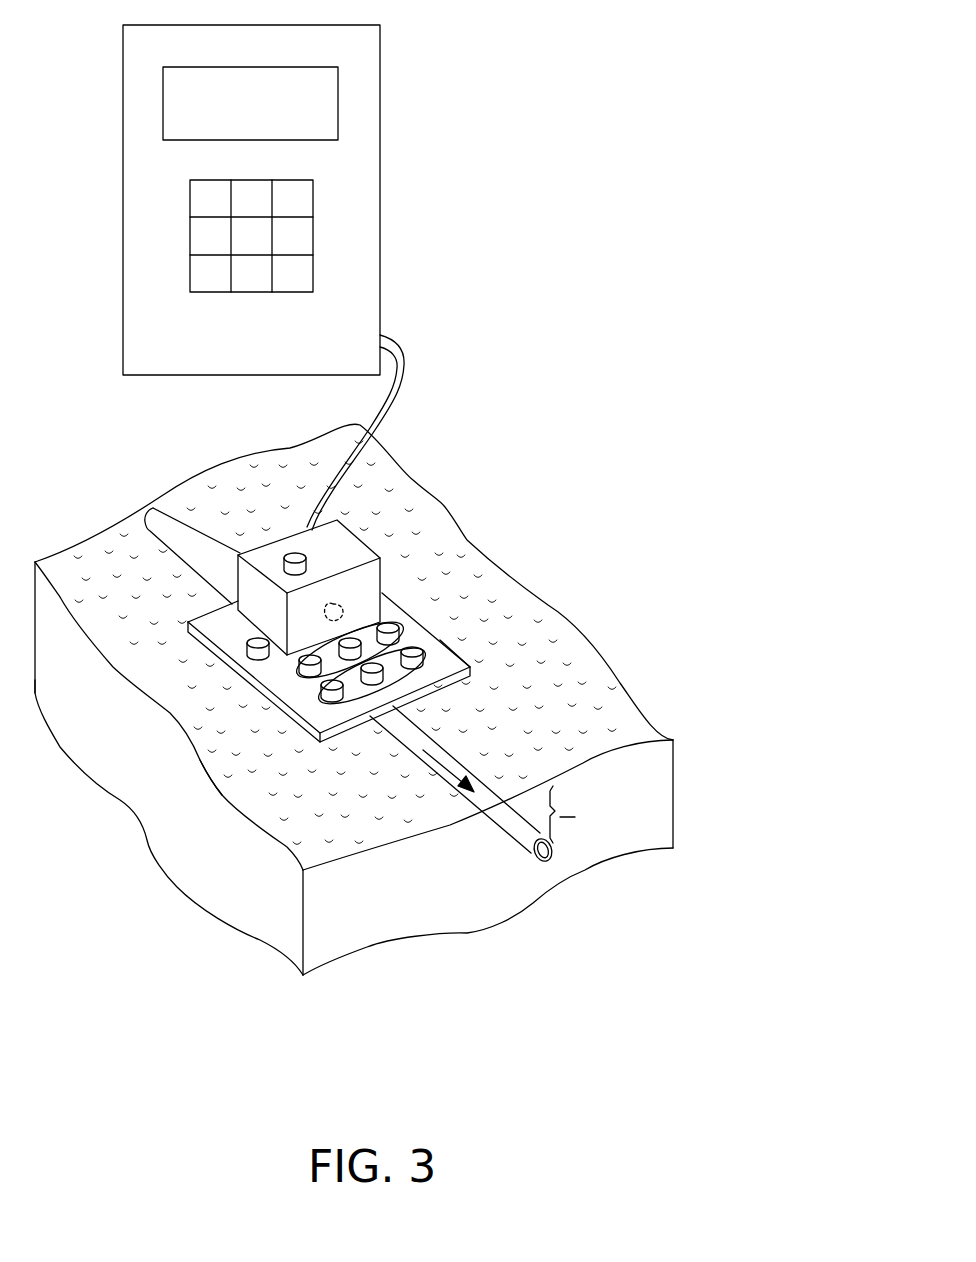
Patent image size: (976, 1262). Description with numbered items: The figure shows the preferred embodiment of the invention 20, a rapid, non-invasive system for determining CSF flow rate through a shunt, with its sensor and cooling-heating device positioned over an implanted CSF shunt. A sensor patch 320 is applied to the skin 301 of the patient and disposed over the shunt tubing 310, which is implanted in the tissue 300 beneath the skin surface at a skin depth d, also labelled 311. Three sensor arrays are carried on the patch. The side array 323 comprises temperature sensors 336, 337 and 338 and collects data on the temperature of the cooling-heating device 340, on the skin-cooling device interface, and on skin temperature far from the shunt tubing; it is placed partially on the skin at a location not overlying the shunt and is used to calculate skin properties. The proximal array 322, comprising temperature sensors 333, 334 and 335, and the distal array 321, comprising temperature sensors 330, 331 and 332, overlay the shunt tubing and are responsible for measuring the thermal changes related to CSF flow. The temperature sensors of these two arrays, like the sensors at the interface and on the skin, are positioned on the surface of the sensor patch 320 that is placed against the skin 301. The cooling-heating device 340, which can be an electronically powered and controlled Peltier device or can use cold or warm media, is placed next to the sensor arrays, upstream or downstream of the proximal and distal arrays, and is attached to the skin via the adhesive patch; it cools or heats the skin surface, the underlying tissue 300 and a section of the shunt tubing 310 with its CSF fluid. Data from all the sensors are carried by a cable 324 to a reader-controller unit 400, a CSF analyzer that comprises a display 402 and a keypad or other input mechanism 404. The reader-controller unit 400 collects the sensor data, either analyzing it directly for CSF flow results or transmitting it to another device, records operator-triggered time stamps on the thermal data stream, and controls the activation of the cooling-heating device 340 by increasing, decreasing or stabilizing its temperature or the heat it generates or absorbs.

The invention 20 is at (672, 308).
The tissue 300 is at (648, 802).
The skin 301 is at (253, 793).
The CSF shunt 310 is at (540, 858).
The skin depth d 311 is at (580, 808).
The sensor patch 320 is at (445, 660).
The third sensor array 321 is at (418, 652).
The second sensor array 322 is at (400, 628).
The sensor array 323 is at (334, 563).
The cable 324 is at (403, 360).
The temperature sensor 330 is at (412, 668).
The temperature sensor 331 is at (372, 684).
The temperature sensor 332 is at (332, 700).
The temperature sensor 333 is at (407, 625).
The temperature sensor 334 is at (392, 622).
The temperature sensor 335 is at (252, 672).
The temperature sensor 336 is at (295, 552).
The temperature sensor 337 is at (338, 600).
The temperature sensor 338 is at (196, 636).
The cooling-heating device 340 is at (260, 640).
The reader-controller unit 400 is at (138, 243).
The display 402 is at (325, 118).
The keypad 404 is at (292, 202).